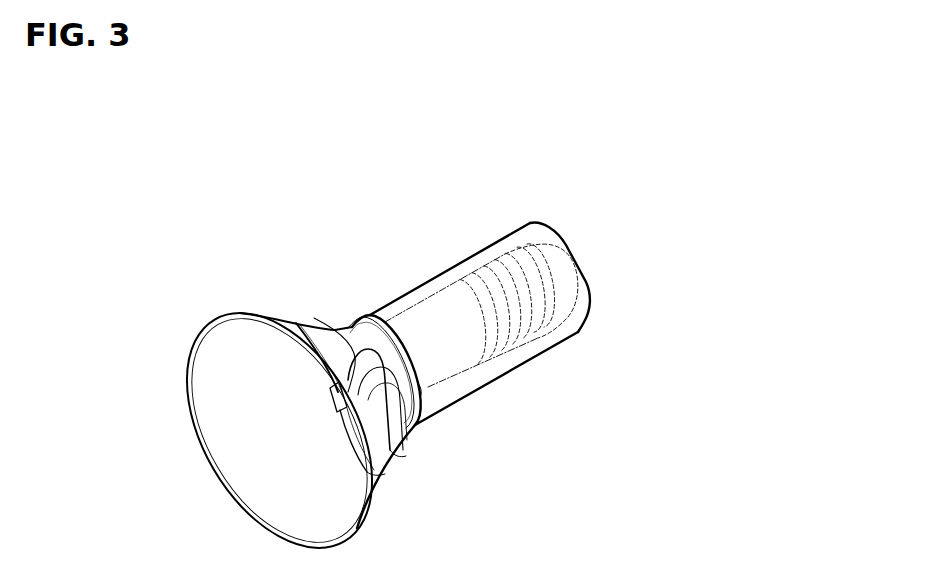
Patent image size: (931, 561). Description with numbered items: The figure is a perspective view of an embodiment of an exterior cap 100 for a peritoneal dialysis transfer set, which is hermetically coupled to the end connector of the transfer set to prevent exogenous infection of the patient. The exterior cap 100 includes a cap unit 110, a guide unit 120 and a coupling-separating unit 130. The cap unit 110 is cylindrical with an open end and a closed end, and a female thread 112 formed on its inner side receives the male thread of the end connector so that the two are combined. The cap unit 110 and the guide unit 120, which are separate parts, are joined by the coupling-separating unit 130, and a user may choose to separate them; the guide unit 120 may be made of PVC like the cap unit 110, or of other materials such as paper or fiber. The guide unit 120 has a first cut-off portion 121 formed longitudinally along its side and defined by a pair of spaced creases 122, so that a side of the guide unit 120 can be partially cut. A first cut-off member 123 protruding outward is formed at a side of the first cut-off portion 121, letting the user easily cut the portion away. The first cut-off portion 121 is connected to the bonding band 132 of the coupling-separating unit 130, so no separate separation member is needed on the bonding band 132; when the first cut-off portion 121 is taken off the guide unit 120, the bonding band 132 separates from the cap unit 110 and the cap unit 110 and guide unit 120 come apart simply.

The exterior cap 100 is at (456, 168).
The cap unit 110 is at (557, 355).
The female thread 112 is at (512, 253).
The guide unit 120 is at (209, 308).
The first cut-off portion 121 is at (314, 318).
The creases 122 is at (397, 432).
The first cut-off member 123 is at (383, 460).
The coupling-separating unit 130 is at (375, 313).
The bonding band 132 is at (417, 388).